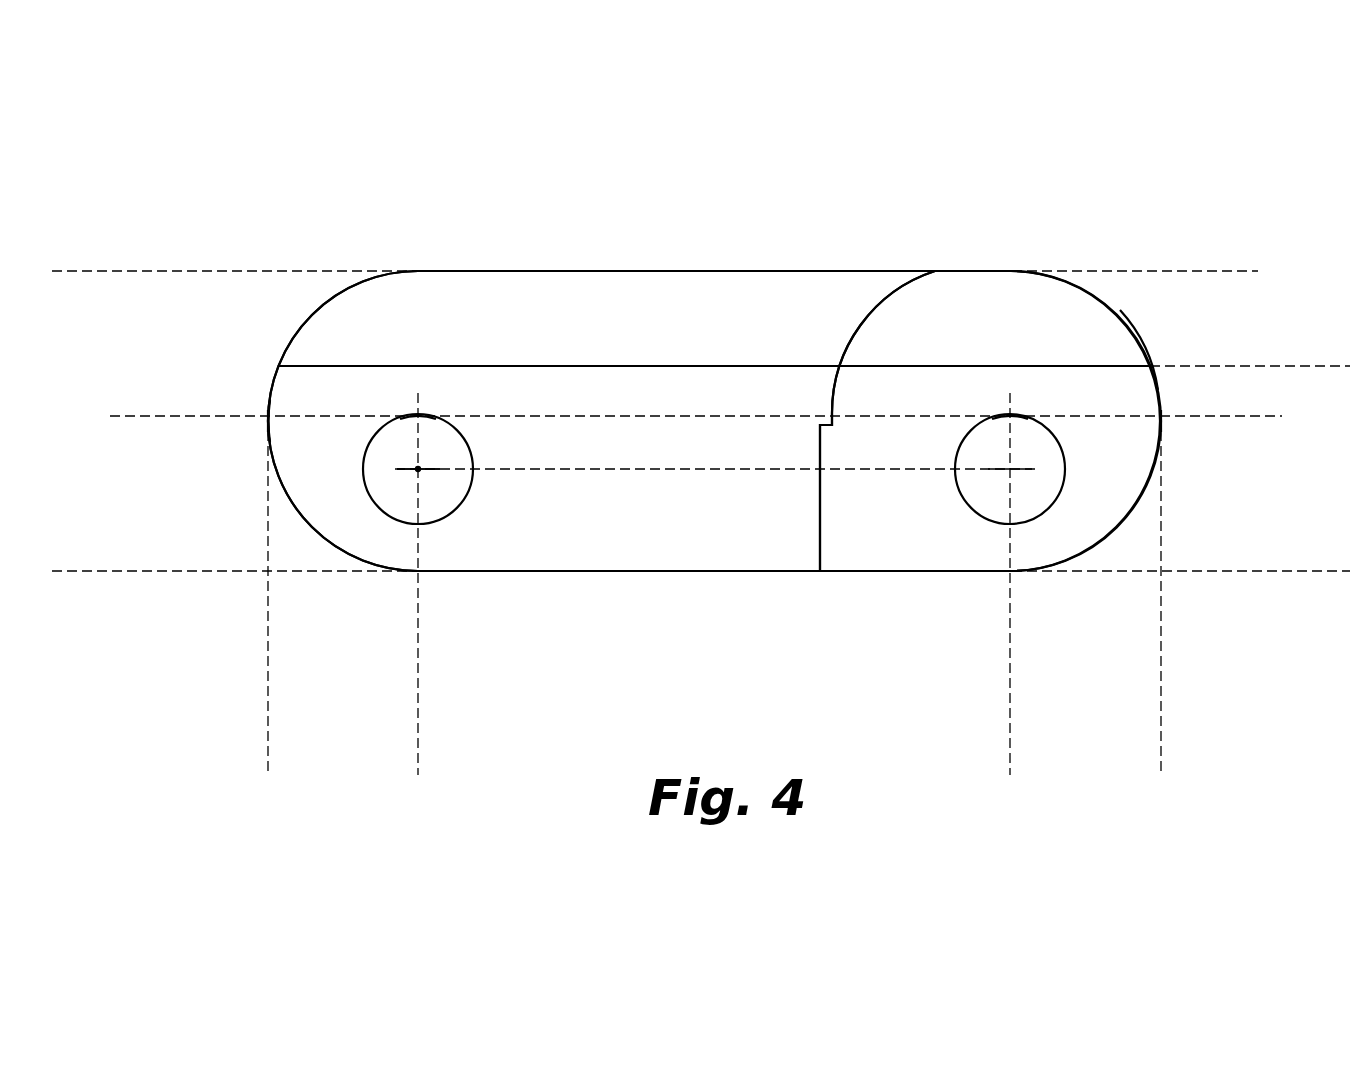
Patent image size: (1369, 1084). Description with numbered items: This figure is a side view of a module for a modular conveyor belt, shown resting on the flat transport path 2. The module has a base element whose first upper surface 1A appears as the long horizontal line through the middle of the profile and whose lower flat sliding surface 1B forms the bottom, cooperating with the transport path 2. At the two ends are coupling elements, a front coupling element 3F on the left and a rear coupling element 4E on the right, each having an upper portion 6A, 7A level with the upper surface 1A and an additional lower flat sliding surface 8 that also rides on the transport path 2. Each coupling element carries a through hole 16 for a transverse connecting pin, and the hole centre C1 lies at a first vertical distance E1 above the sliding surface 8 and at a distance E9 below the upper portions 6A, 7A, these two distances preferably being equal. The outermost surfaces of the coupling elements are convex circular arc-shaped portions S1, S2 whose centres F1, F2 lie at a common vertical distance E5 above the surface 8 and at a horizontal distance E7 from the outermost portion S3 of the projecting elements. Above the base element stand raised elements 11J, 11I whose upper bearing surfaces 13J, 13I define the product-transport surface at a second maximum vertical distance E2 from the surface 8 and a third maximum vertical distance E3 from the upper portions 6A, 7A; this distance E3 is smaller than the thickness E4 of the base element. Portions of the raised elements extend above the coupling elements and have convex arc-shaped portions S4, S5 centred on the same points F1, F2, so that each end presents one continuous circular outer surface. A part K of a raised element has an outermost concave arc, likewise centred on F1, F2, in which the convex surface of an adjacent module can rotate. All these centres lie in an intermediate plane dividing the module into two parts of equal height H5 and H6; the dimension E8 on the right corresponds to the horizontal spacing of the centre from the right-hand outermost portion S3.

The flat transport path 2 is at (1207, 570).
The circular arc-shaped portion S4 is at (299, 324).
The circular arc-shaped portion S1 is at (282, 494).
The front coupling element 3F is at (264, 430).
The outermost portion S3 is at (268, 416).
The upper portion 6A is at (342, 364).
The first upper surface 1A is at (677, 366).
The upper portion 7A is at (1108, 366).
The centre F1 is at (418, 416).
The centre F2 is at (1010, 416).
The raised element 11J is at (437, 300).
The raised element 11I is at (1018, 270).
The upper bearing surface 13J is at (620, 272).
The upper bearing surface 13I is at (967, 272).
The part K is at (881, 330).
The circular arc-shaped portion S5 is at (1098, 294).
The rear coupling element 4E is at (1150, 346).
The circular arc-shaped portion S2 is at (1127, 532).
The through hole 16 is at (379, 504).
The centre C1 is at (418, 469).
The lower flat sliding surface 8 is at (445, 574).
The lower flat sliding surface 1B is at (712, 574).
The first vertical distance E1 is at (506, 469).
The second maximum vertical distance E2 is at (70, 271).
The third maximum vertical distance E3 is at (506, 271).
The thickness E4 is at (1334, 366).
The vertical distance E5 is at (117, 416).
The horizontal distance E7 is at (418, 753).
The dimension E8 is at (1161, 753).
The vertical distance E9 is at (506, 366).
The height H5 is at (580, 416).
The height H6 is at (580, 416).